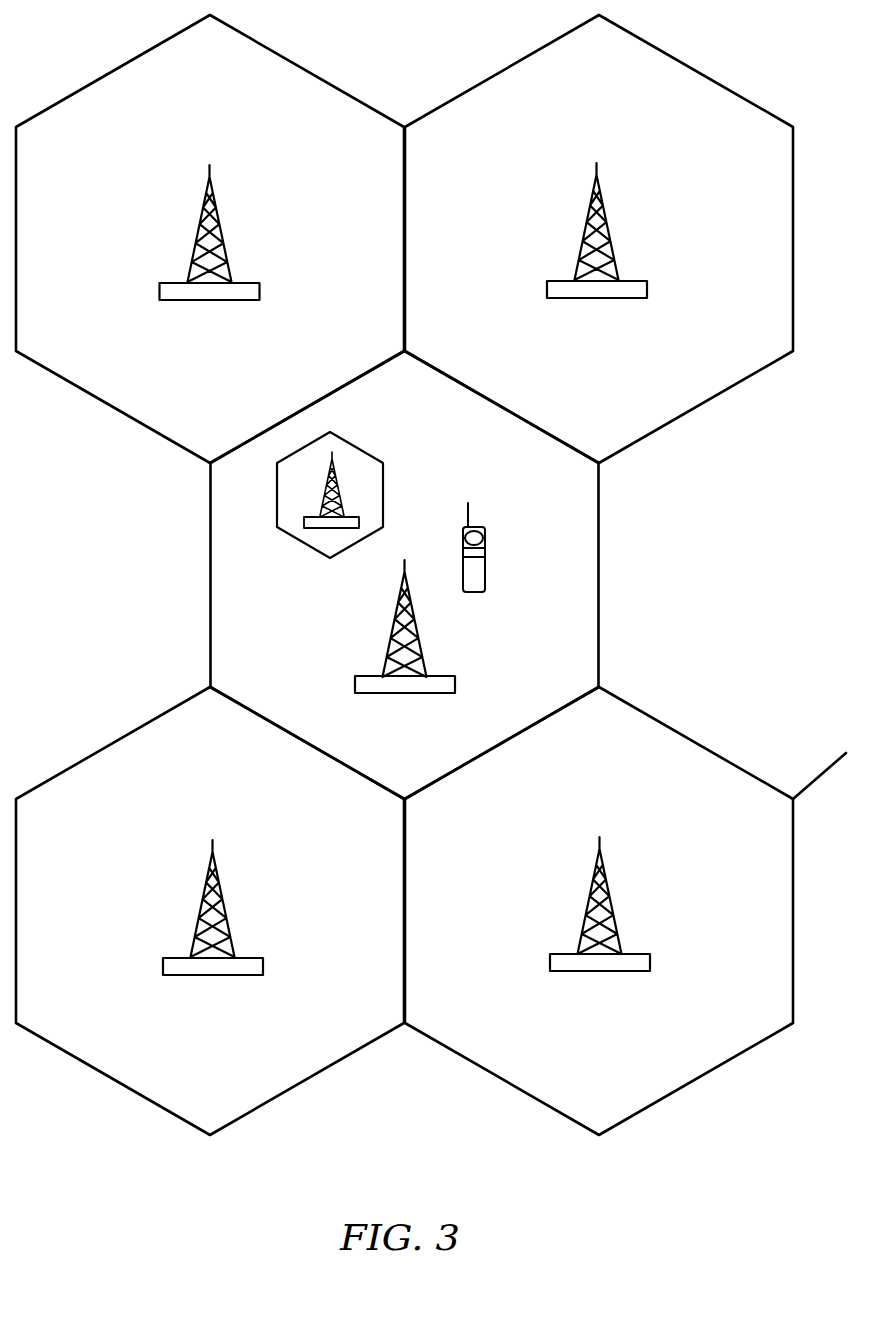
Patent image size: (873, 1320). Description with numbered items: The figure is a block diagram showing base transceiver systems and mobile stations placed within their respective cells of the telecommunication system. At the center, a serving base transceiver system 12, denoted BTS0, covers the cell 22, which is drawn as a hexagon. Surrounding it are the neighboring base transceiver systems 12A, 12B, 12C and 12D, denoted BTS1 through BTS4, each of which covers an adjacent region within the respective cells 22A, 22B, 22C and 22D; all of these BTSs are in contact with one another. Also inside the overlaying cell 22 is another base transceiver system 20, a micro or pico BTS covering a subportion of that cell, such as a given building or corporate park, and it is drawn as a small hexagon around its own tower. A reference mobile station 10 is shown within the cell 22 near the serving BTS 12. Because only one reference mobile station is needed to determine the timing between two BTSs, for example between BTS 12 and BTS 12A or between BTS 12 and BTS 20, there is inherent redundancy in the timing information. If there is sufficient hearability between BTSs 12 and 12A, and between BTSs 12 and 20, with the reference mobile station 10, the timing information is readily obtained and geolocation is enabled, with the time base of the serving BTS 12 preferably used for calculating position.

The mobile station 10 is at (485, 565).
The serving base transceiver system 12 is at (428, 693).
The neighboring base transceiver system 12A is at (620, 298).
The neighboring base transceiver system 12B is at (235, 300).
The neighboring base transceiver system 12C is at (237, 974).
The neighboring base transceiver system 12D is at (625, 970).
The micro or pico base transceiver system 20 is at (359, 522).
The cell 22 is at (492, 397).
The cell 22A is at (685, 412).
The cell 22B is at (125, 413).
The cell 22C is at (307, 1083).
The cell 22D is at (508, 1083).